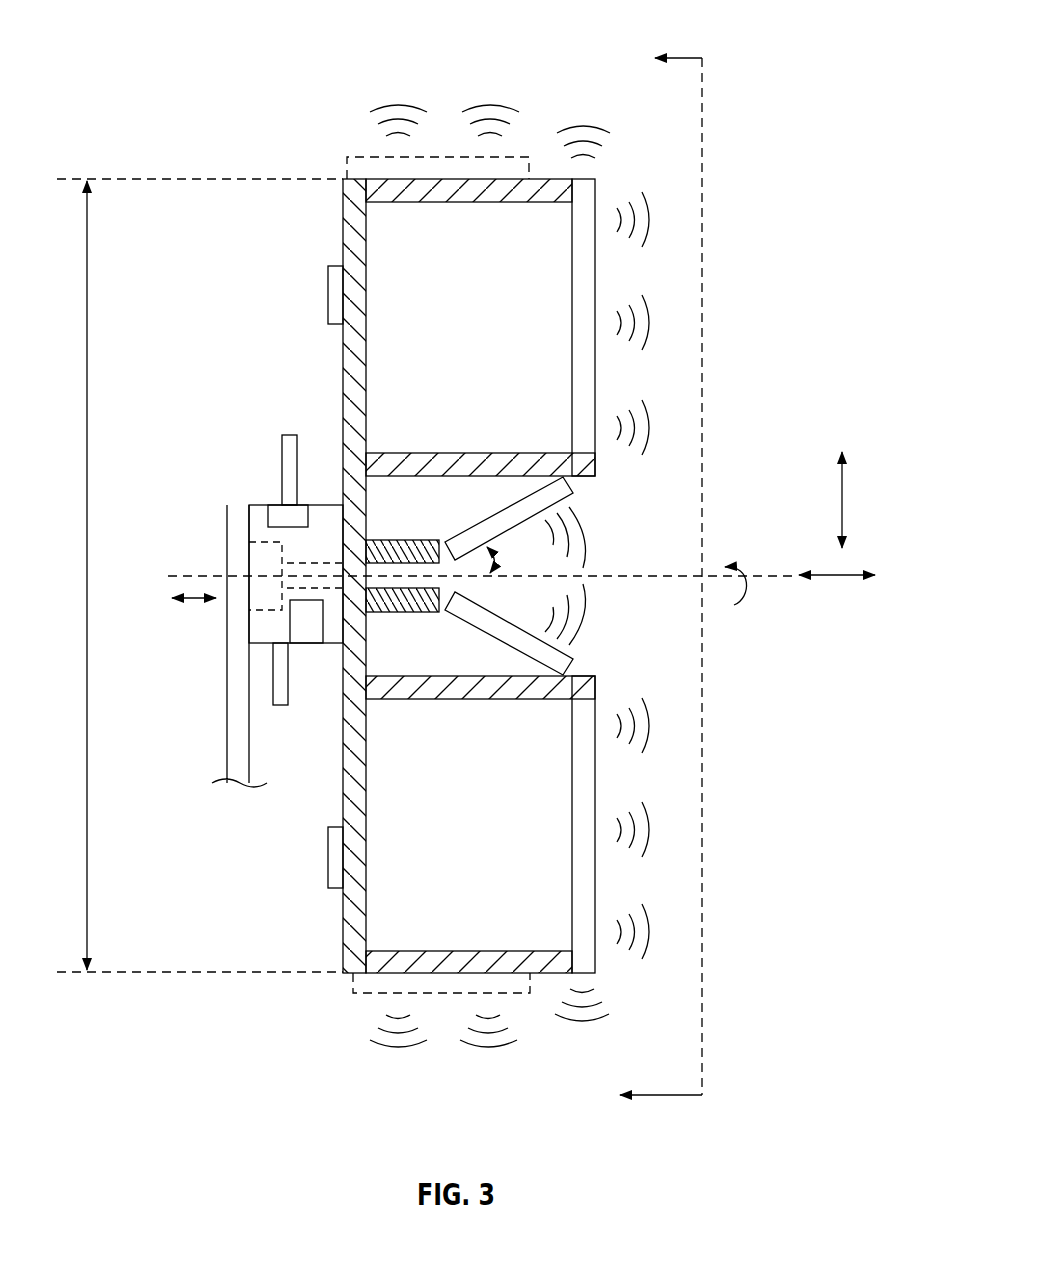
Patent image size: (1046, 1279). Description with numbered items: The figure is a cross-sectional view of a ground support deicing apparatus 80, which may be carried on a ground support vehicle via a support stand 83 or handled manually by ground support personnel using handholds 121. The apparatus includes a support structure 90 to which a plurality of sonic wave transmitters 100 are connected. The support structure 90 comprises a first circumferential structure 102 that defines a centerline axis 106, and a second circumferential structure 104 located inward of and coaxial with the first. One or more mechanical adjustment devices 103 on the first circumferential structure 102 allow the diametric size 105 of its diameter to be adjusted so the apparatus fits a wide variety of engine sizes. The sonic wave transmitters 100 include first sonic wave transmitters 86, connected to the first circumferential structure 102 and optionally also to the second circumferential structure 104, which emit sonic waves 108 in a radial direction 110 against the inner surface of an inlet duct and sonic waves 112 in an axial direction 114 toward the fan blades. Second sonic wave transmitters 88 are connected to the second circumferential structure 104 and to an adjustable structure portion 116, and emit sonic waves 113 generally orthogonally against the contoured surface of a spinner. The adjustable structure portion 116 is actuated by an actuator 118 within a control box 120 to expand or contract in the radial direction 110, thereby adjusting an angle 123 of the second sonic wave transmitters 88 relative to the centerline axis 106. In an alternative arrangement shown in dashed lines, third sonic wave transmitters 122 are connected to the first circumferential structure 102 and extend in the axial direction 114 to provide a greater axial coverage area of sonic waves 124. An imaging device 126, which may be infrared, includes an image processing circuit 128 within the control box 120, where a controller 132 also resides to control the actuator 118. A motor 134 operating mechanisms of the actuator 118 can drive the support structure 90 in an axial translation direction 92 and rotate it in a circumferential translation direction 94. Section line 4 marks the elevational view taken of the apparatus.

The ground support deicing apparatus 80 is at (336, 70).
The support stand 83 is at (240, 737).
The first sonic wave transmitters 86 is at (587, 398).
The second sonic wave transmitters 88 is at (476, 526).
The support structure 90 is at (339, 232).
The axial translation direction 92 is at (836, 577).
The circumferential translation direction 94 is at (743, 555).
The sonic wave transmitters 100 is at (587, 288).
The first circumferential structure 102 is at (352, 192).
The mechanical adjustment devices 103 is at (327, 297).
The second circumferential structure 104 is at (463, 465).
The diametric size 105 is at (87, 342).
The centerline axis 106 is at (188, 575).
The sonic waves 108 is at (570, 123).
The radial direction 110 is at (843, 500).
The sonic waves 112 is at (657, 222).
The sonic waves 113 is at (593, 545).
The axial direction 114 is at (188, 603).
The adjustable structure portion 116 is at (373, 616).
The actuator 118 is at (300, 561).
The control box 120 is at (260, 517).
The handholds 121 is at (290, 430).
The third sonic wave transmitters 122 is at (372, 167).
The angle 123 is at (497, 560).
The sonic waves 124 is at (388, 80).
The imaging device 126 is at (287, 623).
The image processing circuit 128 is at (308, 637).
The controller 132 is at (288, 517).
The motor 134 is at (260, 598).
The view 4- 4 is at (650, 578).